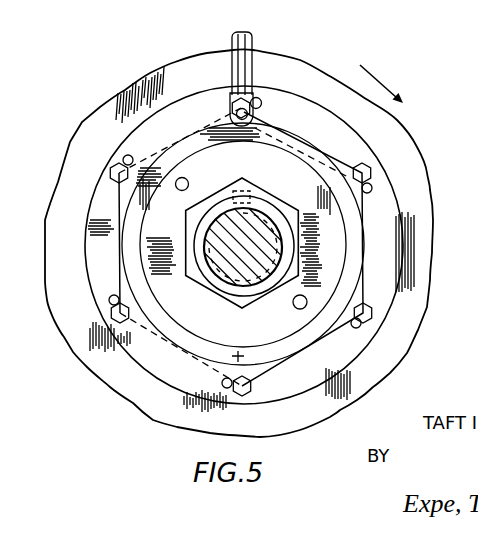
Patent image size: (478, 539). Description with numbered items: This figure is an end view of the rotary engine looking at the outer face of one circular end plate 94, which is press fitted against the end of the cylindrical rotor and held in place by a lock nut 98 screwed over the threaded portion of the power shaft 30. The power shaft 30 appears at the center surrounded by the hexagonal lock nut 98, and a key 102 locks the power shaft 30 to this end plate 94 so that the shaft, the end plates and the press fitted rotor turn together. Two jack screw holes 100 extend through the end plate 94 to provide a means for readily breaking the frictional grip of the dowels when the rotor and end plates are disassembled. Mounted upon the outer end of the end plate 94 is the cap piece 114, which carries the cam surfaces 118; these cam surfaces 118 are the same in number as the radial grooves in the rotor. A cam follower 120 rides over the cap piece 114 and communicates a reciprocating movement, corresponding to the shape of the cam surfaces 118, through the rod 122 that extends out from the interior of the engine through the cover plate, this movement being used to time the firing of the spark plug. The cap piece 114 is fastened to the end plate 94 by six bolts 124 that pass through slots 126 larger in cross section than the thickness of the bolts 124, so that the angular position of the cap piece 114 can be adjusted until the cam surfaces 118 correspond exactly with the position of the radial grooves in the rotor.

The power shaft 30 is at (216, 237).
The end plate 94 is at (428, 219).
The lock nut 98 is at (211, 291).
The jack screw hole 100 is at (186, 179).
The key 102 is at (249, 195).
The cap piece 114 is at (268, 114).
The cam surface 118 is at (345, 164).
The cam follower 120 is at (230, 117).
The rod 122 is at (255, 44).
The bolt 124 is at (233, 94).
The slot 126 is at (261, 101).